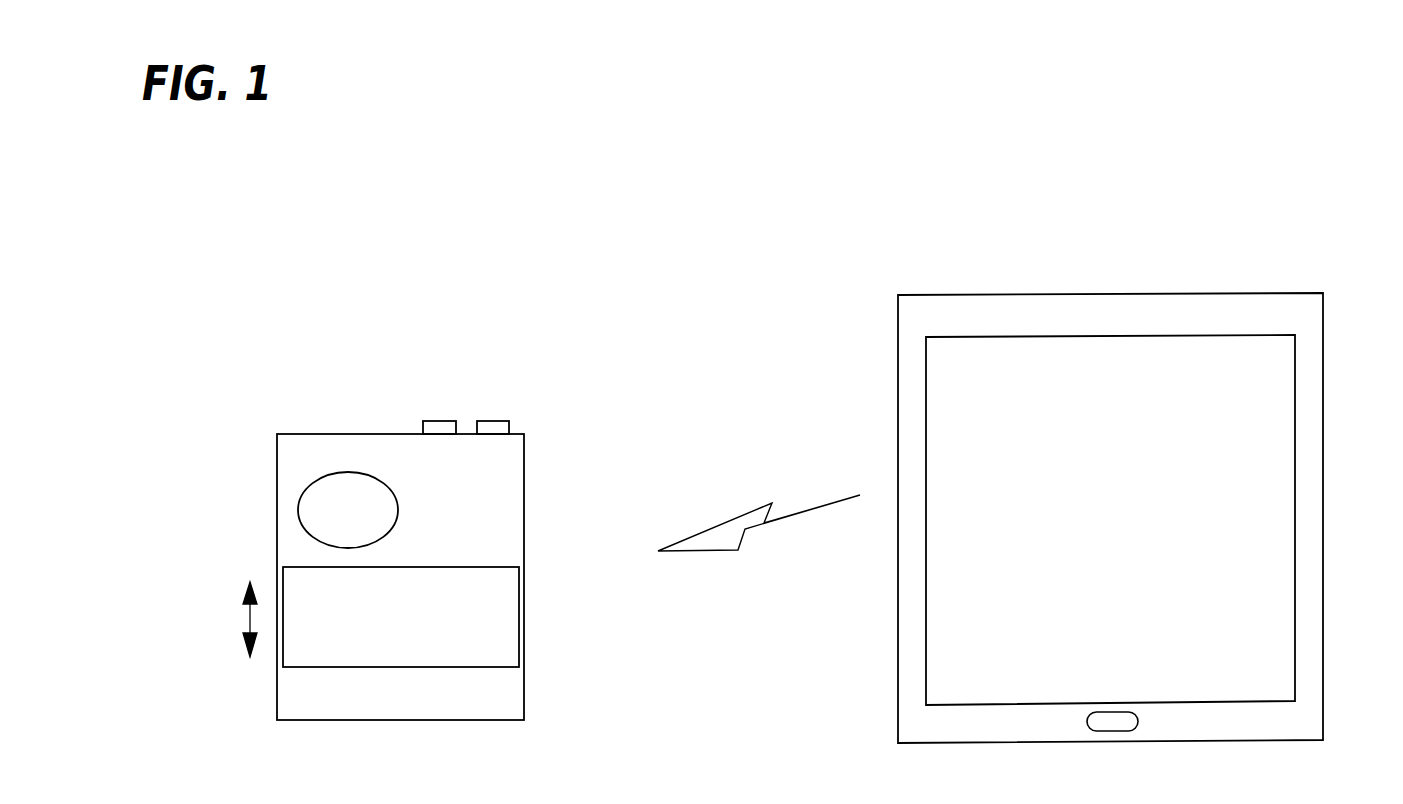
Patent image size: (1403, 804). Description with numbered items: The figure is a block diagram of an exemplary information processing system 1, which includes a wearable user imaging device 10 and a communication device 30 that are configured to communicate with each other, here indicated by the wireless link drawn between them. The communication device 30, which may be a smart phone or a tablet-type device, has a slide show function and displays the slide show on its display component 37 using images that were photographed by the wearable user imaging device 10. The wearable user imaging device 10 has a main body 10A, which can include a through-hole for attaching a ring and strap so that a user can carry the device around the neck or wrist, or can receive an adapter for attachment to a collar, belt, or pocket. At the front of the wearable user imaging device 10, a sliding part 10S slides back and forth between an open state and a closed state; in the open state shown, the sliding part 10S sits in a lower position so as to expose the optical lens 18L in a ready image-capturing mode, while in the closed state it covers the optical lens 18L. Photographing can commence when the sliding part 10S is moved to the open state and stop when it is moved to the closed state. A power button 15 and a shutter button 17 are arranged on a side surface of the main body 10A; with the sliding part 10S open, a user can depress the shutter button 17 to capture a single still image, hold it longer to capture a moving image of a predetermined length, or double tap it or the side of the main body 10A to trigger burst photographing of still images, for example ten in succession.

The information processing system 1 is at (764, 229).
The wearable user imaging device 10 is at (406, 502).
The main body 10A is at (293, 433).
The sliding part 10S is at (502, 620).
The power button 15 is at (440, 419).
The shutter button 17 is at (508, 420).
The optical lens 18L is at (298, 508).
The communication device 30 is at (1145, 454).
The display component 37 is at (1295, 358).